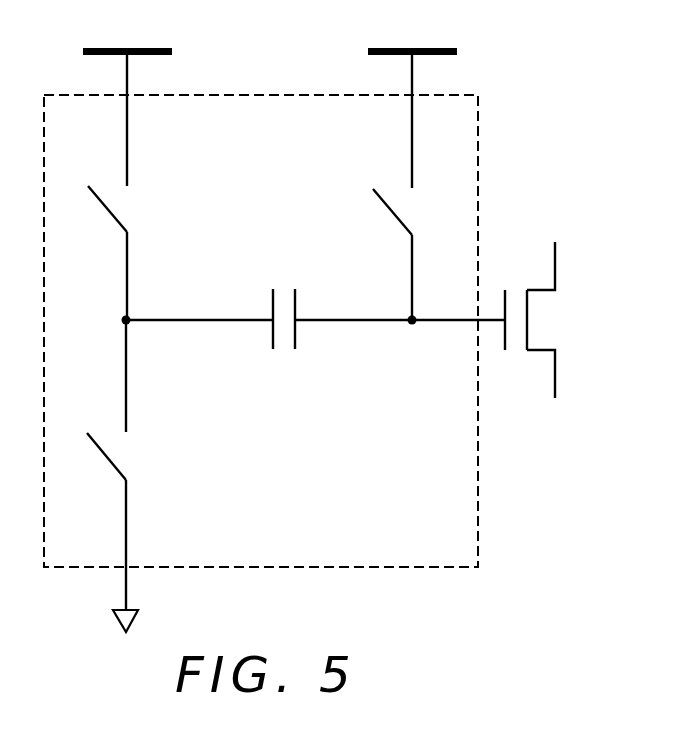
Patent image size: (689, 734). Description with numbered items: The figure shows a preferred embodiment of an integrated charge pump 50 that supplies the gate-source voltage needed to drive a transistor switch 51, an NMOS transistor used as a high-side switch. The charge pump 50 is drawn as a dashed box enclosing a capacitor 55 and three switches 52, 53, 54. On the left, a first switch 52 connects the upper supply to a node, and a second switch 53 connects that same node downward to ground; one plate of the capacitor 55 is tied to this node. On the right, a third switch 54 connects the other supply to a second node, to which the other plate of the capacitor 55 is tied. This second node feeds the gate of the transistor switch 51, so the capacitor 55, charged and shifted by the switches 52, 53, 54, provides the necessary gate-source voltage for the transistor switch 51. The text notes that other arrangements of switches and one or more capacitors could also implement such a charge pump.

The integrated charge pump 50 is at (265, 117).
The transistor switch 51 is at (538, 322).
The switch 52 is at (122, 201).
The switch 53 is at (127, 452).
The switch 54 is at (407, 203).
The capacitor 55 is at (283, 353).